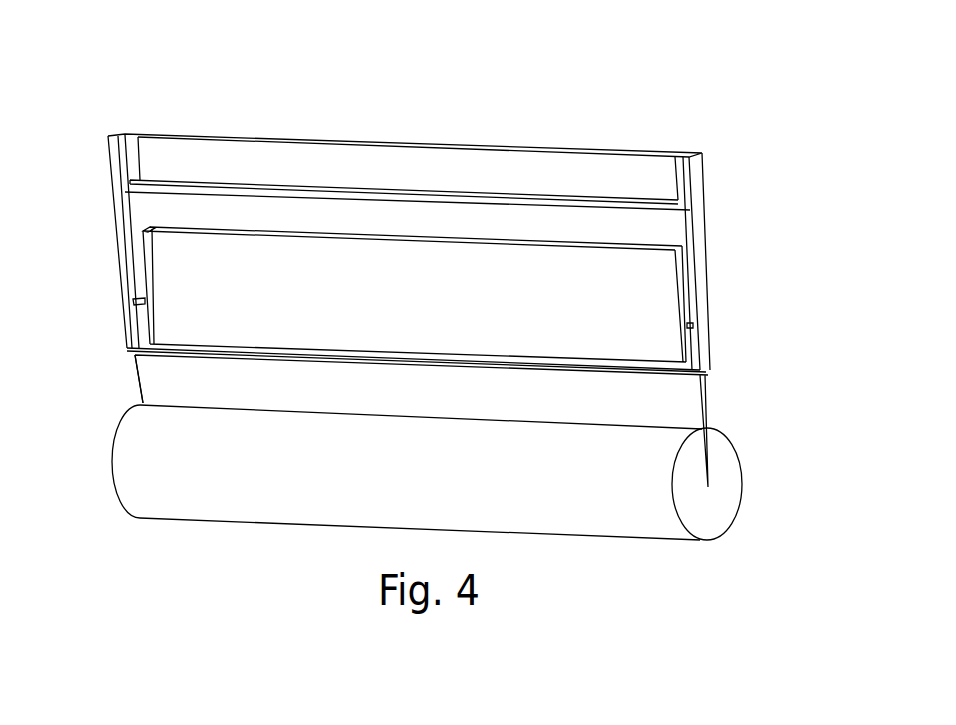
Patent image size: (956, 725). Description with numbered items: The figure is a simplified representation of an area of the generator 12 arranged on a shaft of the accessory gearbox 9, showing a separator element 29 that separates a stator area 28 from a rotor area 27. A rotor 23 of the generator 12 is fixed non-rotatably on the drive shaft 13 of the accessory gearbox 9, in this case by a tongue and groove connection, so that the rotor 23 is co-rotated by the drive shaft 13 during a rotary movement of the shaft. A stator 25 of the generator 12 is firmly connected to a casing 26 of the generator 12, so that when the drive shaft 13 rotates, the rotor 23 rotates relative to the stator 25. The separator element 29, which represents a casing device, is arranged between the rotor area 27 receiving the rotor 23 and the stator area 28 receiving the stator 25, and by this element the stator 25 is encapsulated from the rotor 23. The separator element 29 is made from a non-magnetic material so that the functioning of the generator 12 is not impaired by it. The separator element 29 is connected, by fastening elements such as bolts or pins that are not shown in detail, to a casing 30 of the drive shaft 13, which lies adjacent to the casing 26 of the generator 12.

The accessory gearbox 9 is at (114, 62).
The generator 12 is at (118, 122).
The casing of the generator 26 is at (513, 165).
The stator area 28 is at (423, 228).
The stator 25 is at (635, 287).
The casing of the drive shaft 30 is at (697, 183).
The separator element 29 is at (703, 374).
The rotor area 27 is at (432, 398).
The rotor 23 is at (140, 380).
The drive shaft 13 is at (722, 488).